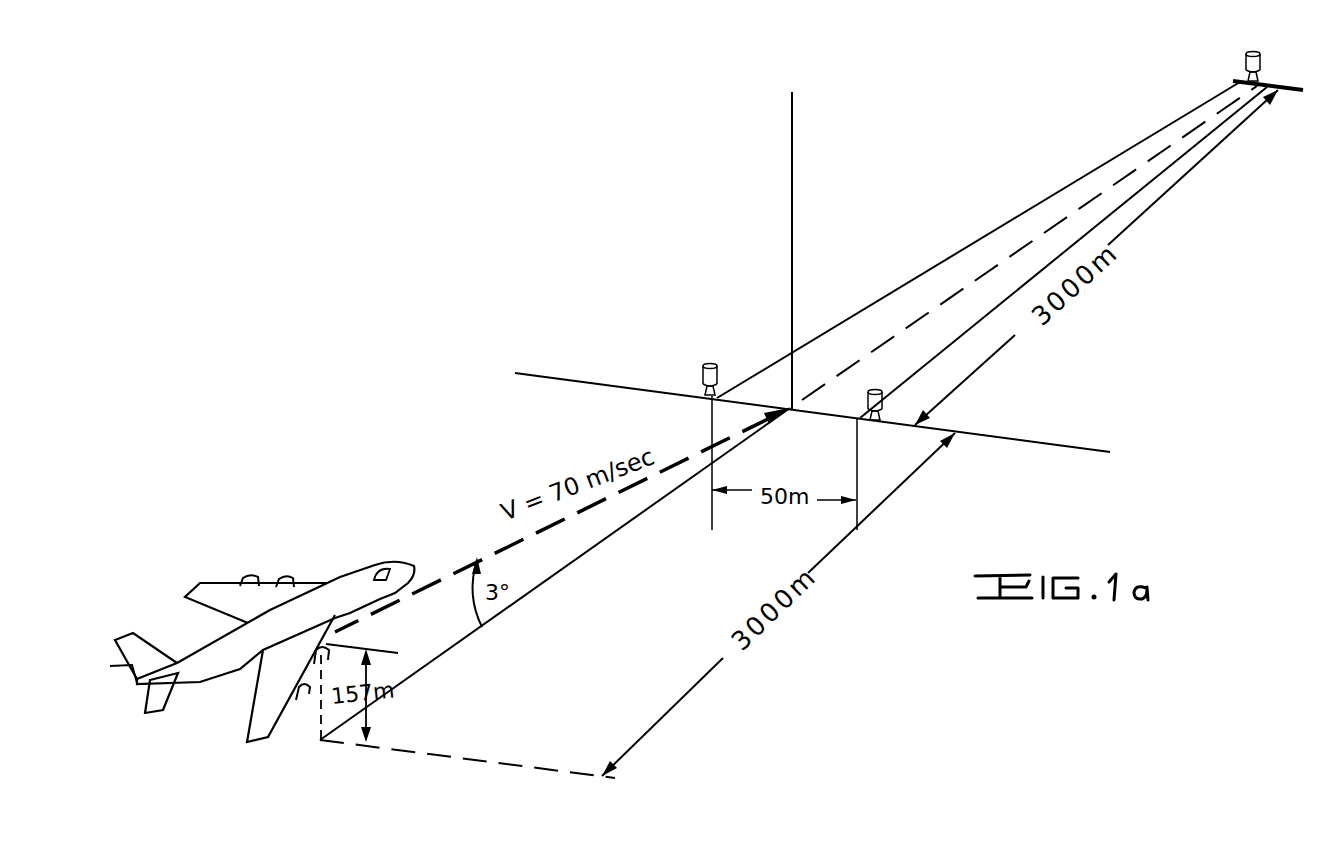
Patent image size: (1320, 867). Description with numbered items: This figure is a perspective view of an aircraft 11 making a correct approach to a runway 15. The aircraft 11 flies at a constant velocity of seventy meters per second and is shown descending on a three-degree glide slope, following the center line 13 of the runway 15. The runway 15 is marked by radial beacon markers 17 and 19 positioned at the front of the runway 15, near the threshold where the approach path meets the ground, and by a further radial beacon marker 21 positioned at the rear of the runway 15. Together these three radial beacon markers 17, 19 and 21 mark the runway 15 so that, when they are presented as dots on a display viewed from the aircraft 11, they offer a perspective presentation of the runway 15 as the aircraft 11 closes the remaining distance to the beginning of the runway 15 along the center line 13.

The aircraft 11 is at (341, 578).
The center line 13 is at (550, 578).
The runway 15 is at (1090, 172).
The radial beacon marker 17 is at (710, 364).
The radial beacon marker 19 is at (884, 401).
The radial beacon marker 21 is at (1263, 62).